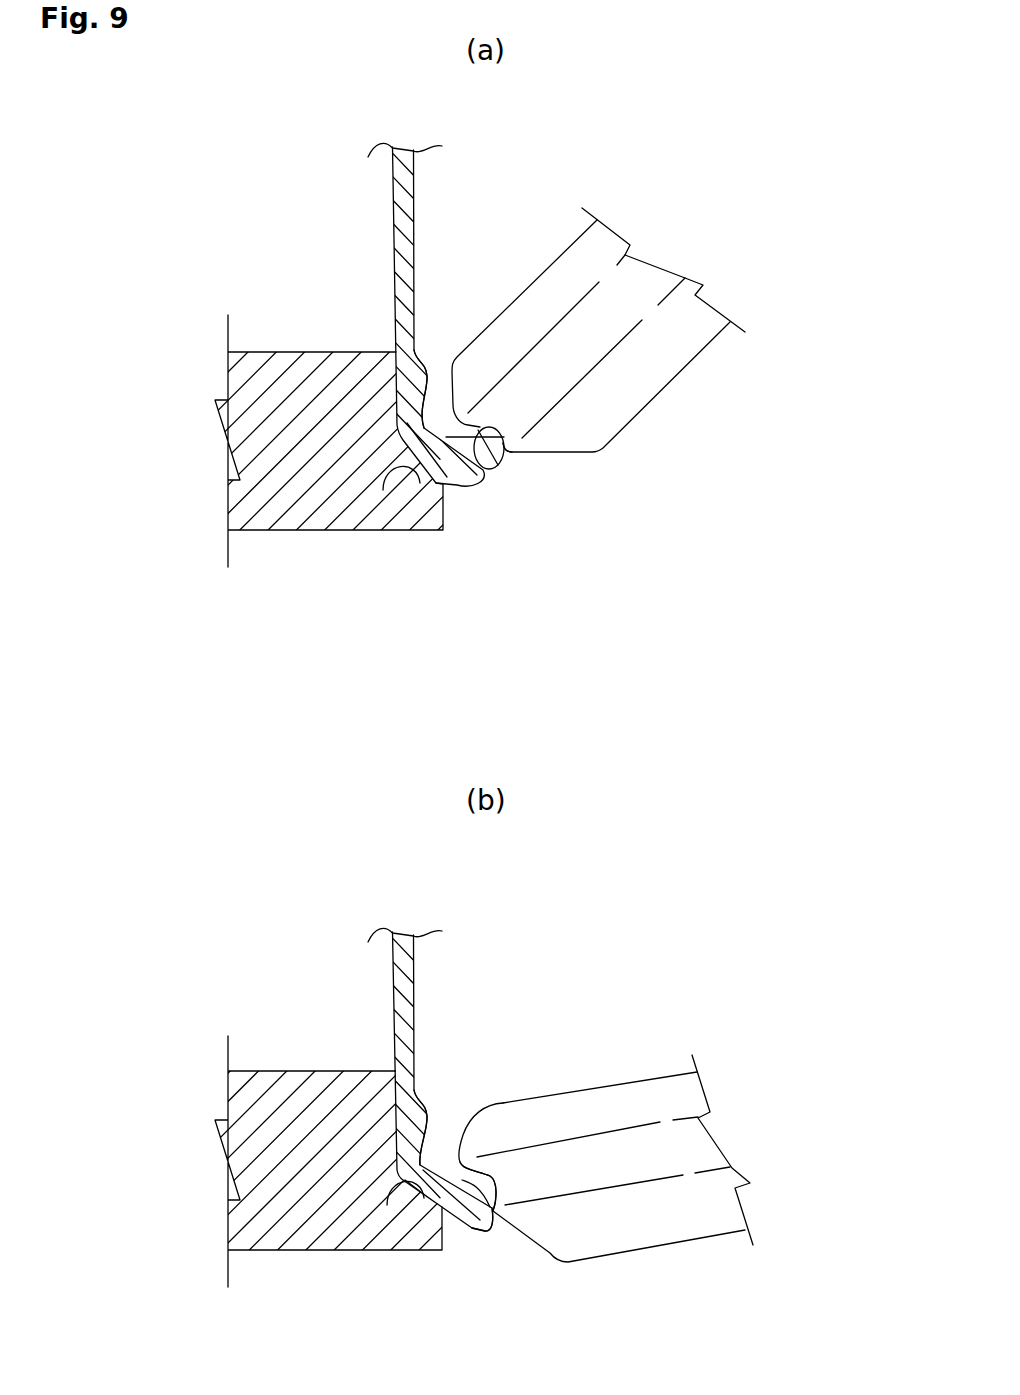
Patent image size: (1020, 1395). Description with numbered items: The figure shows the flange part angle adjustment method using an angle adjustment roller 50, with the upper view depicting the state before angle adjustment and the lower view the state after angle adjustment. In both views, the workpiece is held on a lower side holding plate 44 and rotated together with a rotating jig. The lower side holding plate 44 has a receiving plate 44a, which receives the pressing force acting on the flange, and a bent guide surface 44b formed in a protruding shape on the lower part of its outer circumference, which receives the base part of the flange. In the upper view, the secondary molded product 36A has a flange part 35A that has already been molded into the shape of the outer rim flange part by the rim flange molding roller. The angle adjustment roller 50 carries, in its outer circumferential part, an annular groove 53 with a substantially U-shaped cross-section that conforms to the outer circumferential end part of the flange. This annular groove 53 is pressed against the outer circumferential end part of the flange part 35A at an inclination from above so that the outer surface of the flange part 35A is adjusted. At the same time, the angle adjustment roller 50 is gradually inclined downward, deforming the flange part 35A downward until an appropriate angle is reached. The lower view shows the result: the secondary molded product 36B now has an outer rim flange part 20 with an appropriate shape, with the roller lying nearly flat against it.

The secondary molded product 36A is at (386, 228).
The secondary molded product 36B is at (385, 991).
The lower side holding plate 44 is at (283, 531).
The receiving plate 44a is at (422, 385).
The bent guide surface 44b is at (384, 492).
The angle adjustment roller 50 is at (688, 370).
The annular groove 53 is at (493, 469).
The flange part 35A is at (503, 462).
The outer rim flange part 20 is at (472, 1230).